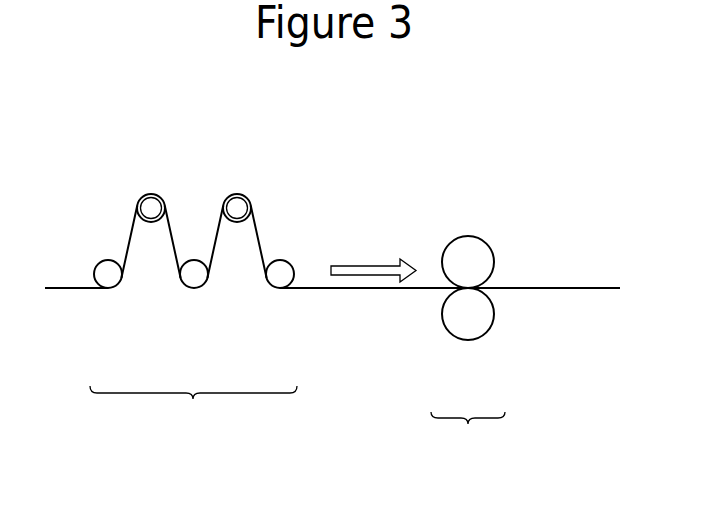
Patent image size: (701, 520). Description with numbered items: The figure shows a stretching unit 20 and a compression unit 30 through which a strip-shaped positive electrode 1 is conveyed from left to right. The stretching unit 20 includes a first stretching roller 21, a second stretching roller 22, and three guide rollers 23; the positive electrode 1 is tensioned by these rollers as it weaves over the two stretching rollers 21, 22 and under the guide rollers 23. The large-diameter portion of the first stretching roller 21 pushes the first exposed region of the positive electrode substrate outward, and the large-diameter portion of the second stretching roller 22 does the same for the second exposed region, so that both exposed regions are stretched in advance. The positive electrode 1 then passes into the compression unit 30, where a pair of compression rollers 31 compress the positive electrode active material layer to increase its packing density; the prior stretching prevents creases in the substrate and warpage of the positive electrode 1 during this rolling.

The positive electrode 1 is at (570, 287).
The stretching unit 20 is at (193, 409).
The first stretching roller 21 is at (151, 208).
The second stretching roller 22 is at (237, 208).
The guide rollers 23 is at (107, 274).
The compression unit 30 is at (468, 436).
The compression rollers 31 is at (466, 252).